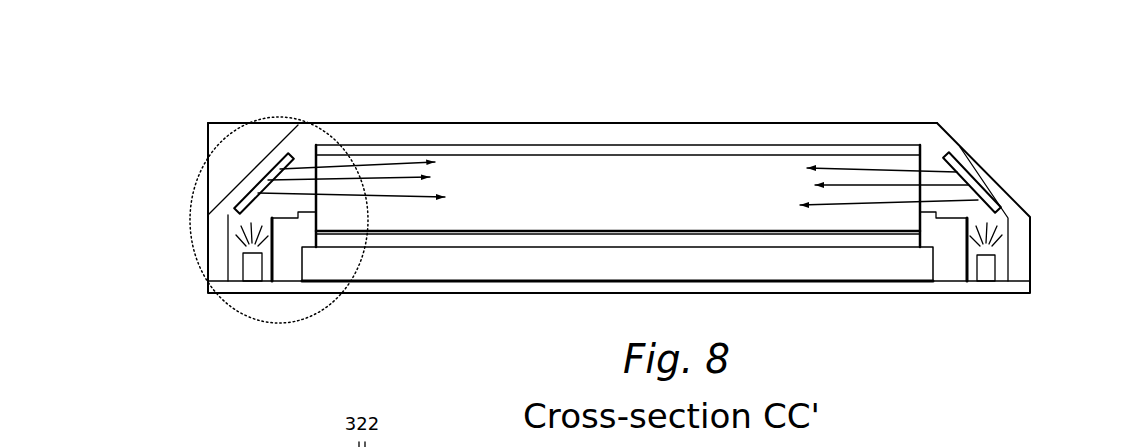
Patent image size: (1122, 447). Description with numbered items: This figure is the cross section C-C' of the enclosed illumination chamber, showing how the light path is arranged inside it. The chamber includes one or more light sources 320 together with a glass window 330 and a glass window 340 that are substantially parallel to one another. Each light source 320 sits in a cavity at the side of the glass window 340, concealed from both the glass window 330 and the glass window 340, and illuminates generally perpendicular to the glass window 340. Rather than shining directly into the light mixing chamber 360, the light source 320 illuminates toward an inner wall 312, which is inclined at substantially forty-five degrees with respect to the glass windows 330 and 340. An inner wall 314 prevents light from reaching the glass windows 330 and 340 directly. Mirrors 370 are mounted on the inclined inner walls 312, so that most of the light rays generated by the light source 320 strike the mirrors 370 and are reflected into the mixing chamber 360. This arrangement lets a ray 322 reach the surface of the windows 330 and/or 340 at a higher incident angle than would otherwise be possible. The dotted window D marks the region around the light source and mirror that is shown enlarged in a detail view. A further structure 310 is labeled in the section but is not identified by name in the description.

The housing 310 is at (217, 247).
The inner wall 312 is at (228, 212).
The inner wall 314 is at (970, 227).
The light source 320 is at (252, 265).
The ray 322 is at (400, 195).
The glass window 330 is at (618, 144).
The glass window 340 is at (810, 238).
The light mixing chamber 360 is at (750, 188).
The mirrors 370 is at (277, 167).
The detailed window D is at (322, 135).